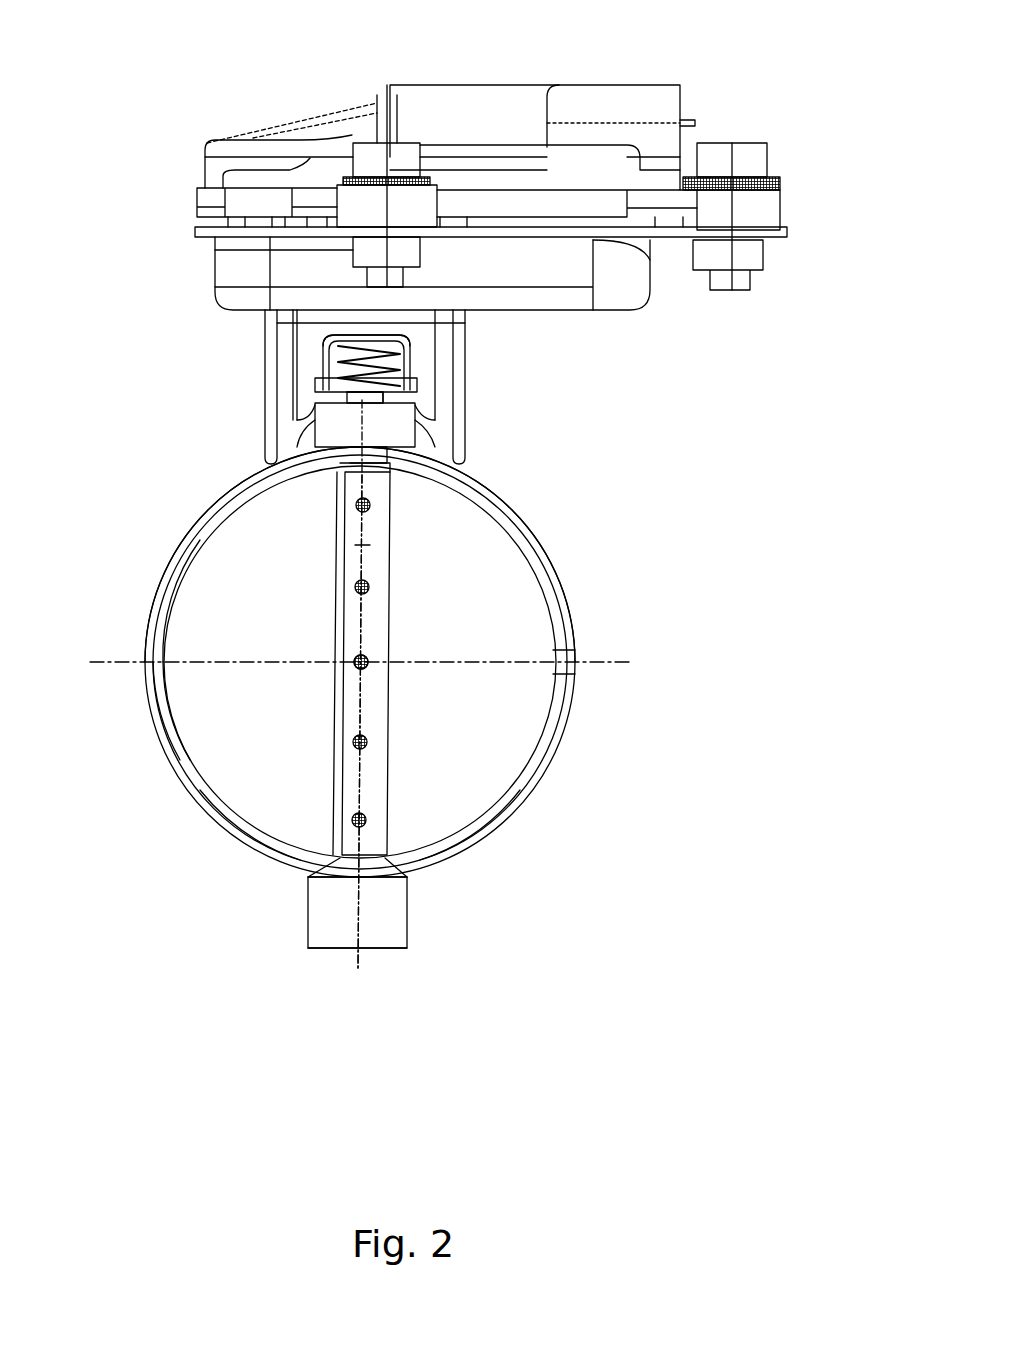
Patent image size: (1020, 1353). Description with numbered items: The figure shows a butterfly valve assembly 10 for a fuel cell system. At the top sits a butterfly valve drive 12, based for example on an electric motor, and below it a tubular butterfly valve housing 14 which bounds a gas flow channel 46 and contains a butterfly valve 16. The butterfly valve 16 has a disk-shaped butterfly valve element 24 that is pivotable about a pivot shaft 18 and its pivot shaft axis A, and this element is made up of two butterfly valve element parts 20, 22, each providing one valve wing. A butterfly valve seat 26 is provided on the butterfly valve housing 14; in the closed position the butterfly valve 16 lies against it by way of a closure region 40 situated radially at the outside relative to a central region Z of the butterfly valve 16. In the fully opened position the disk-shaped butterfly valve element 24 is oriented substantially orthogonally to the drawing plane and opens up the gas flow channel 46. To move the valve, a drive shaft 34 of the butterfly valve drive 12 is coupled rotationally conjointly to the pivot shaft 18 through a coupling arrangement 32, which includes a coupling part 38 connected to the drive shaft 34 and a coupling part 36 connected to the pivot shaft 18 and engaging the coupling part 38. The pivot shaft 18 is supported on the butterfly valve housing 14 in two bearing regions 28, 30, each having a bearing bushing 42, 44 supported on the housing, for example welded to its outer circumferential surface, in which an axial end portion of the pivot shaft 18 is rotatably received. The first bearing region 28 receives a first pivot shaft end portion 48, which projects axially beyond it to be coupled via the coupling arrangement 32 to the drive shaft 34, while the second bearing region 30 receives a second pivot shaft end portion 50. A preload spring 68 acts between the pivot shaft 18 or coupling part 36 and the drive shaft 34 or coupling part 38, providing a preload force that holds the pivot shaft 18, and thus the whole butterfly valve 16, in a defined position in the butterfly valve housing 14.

The butterfly valve assembly 10 is at (622, 885).
The butterfly valve drive 12 is at (478, 78).
The butterfly valve housing 14 is at (558, 575).
The butterfly valve 16 is at (258, 790).
The pivot shaft 18 is at (372, 864).
The butterfly valve element part 20 is at (203, 706).
The butterfly valve element part 22 is at (510, 728).
The disk-shaped butterfly valve element 24 is at (570, 645).
The butterfly valve seat 26 is at (185, 545).
The first bearing region 28 is at (402, 427).
The second bearing region 30 is at (335, 915).
The coupling arrangement 32 is at (243, 376).
The drive shaft 34 is at (385, 318).
The coupling part 36 is at (320, 388).
The coupling part 38 is at (330, 340).
The closure region 40 is at (180, 600).
The bearing bushing 42 is at (335, 423).
The bearing bushing 44 is at (390, 932).
The gas flow channel 46 is at (208, 752).
The first pivot shaft end portion 48 is at (420, 384).
The second pivot shaft end portion 50 is at (347, 860).
The preload spring 68 is at (387, 398).
The pivot shaft axis A is at (368, 540).
The central region Z is at (368, 660).